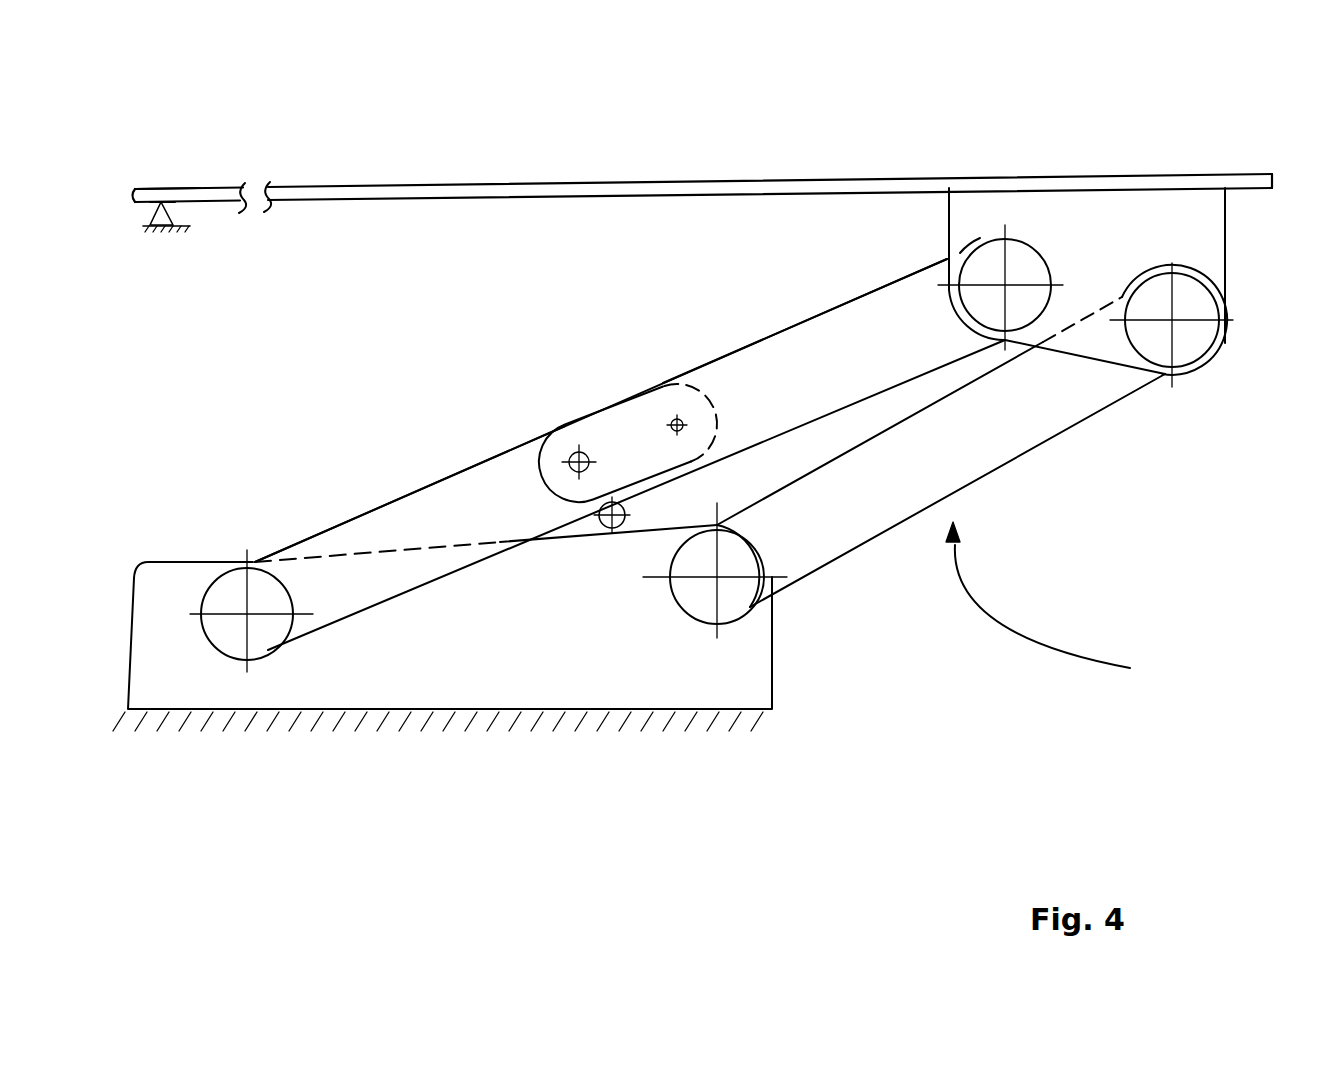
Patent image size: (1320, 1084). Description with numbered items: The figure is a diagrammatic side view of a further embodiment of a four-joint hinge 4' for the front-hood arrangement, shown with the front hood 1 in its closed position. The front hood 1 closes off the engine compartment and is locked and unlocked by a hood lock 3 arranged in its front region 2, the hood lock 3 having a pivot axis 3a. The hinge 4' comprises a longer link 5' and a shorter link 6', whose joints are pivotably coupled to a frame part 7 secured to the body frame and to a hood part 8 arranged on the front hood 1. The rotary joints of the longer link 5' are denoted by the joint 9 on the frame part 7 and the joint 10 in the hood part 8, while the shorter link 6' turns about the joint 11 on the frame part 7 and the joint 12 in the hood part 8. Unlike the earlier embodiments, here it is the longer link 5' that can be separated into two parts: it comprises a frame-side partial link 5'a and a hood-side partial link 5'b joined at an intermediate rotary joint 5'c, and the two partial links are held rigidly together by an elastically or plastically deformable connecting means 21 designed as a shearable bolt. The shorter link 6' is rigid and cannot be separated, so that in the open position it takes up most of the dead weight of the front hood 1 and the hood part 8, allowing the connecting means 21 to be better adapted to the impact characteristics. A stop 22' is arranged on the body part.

The front hood 1 is at (470, 187).
The front region 2 is at (200, 188).
The hood lock 3 is at (160, 214).
The pivot axis 3a is at (183, 201).
The longer link 5' is at (710, 454).
The first partial link 5'a is at (375, 494).
The second partial link 5'b is at (805, 306).
The intermediate rotary joint 5'c is at (607, 427).
The connecting means 21 is at (673, 420).
The stop 22' is at (648, 509).
The frame part 7 is at (522, 641).
The rotary joint 9 is at (260, 623).
The rotary joint 10 is at (1018, 265).
The rotary joint 11 is at (703, 598).
The rotary joint 12 is at (1185, 292).
The hood part 8 is at (1228, 235).
The shorter link 6' is at (710, 452).
The four-joint hinge 4' is at (1055, 618).